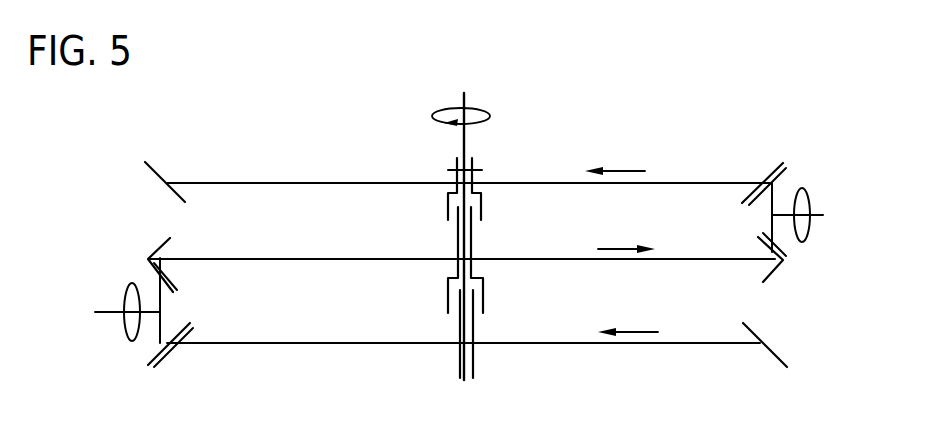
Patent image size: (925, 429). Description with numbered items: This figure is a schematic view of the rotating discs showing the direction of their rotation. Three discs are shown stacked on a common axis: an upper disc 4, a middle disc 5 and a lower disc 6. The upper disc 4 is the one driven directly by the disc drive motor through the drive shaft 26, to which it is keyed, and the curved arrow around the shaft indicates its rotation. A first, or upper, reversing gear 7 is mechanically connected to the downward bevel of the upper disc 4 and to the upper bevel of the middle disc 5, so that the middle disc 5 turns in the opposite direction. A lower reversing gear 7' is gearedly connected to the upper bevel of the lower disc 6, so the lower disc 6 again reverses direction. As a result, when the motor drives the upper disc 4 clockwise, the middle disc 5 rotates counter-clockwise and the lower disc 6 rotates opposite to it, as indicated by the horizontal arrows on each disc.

The upper disc 4 is at (258, 173).
The middle disc 5 is at (707, 262).
The lower disc 6 is at (563, 345).
The first reversing gear 7 is at (827, 204).
The lower reversing gear 7' is at (95, 299).
The drive shaft 26 is at (458, 145).